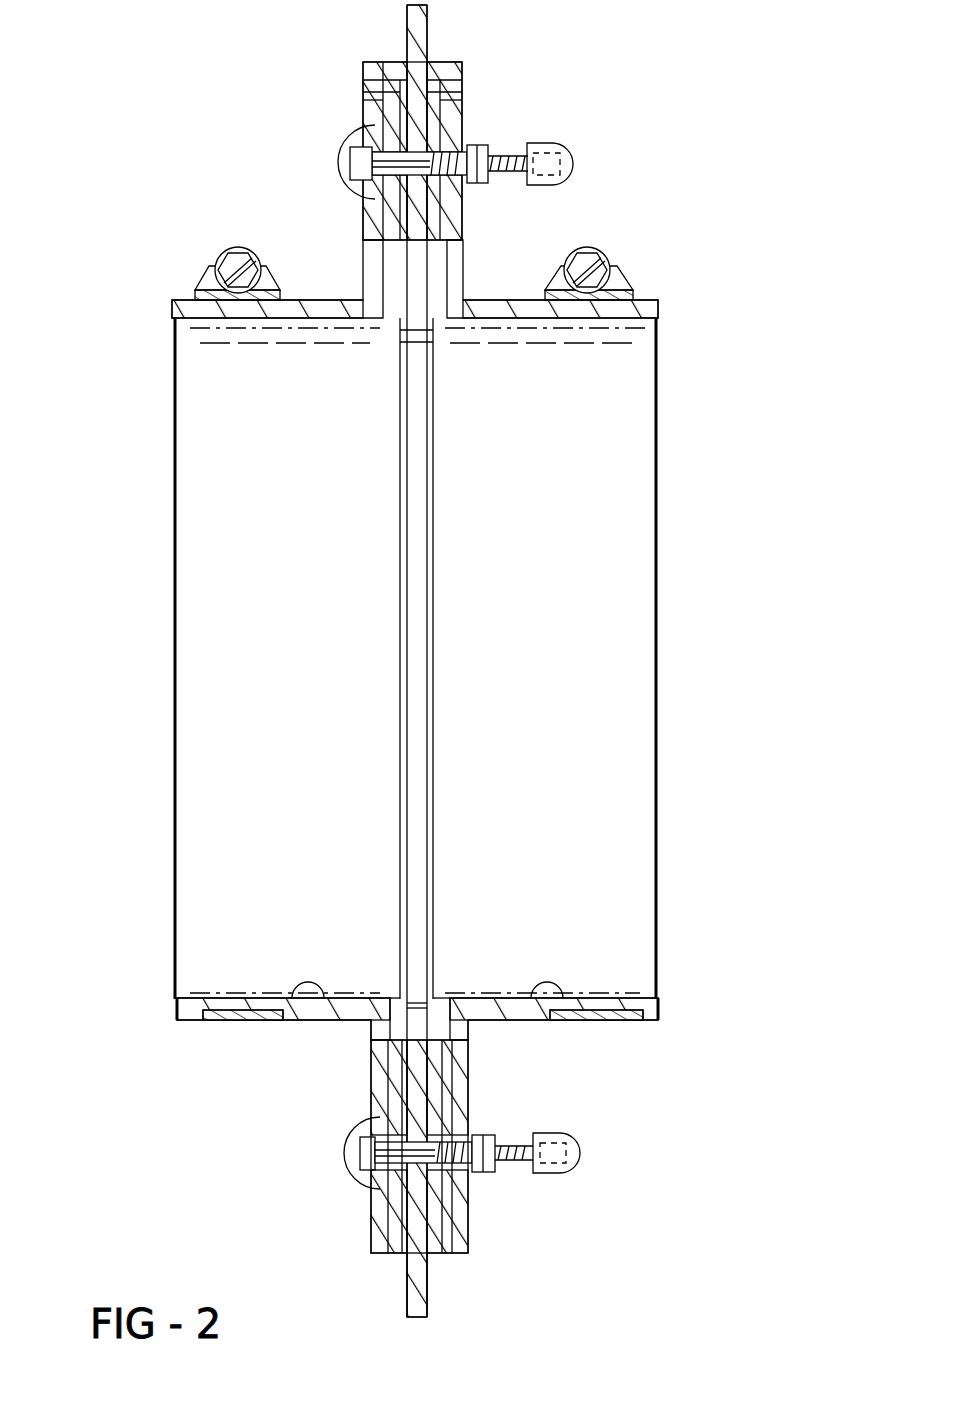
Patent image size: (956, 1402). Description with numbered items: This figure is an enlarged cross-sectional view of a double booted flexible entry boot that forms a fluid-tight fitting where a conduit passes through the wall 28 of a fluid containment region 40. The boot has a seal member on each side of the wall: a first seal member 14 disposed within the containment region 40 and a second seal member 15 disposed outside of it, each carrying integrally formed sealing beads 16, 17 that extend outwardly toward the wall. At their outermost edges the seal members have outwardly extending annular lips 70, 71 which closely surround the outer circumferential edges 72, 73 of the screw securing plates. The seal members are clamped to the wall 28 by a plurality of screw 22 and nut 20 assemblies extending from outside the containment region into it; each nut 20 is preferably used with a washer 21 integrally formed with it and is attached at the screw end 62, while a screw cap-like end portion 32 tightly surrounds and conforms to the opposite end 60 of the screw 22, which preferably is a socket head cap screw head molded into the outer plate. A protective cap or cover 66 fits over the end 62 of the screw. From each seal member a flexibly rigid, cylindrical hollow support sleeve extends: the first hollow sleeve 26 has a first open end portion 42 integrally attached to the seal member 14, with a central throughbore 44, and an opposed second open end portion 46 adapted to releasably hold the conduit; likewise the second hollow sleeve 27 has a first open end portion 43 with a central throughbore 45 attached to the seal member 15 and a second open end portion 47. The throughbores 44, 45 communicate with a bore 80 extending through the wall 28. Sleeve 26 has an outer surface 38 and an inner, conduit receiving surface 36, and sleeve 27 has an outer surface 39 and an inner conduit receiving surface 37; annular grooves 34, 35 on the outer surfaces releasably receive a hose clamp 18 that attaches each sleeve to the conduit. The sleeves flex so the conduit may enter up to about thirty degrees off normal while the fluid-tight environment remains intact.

The first seal member 14 is at (438, 60).
The second seal member 15 is at (378, 58).
The sealing beads 16 is at (465, 97).
The sealing beads 17 is at (365, 97).
The hose clamp 18 is at (212, 255).
The nut 20 is at (480, 1174).
The washer 21 is at (475, 1178).
The screw 22 is at (503, 152).
The first hollow sleeve 26 is at (522, 1024).
The second hollow sleeve 27 is at (312, 1024).
The wall 28 is at (407, 1280).
The screw cap-like end portion 32 is at (350, 160).
The annular groove 34 is at (620, 1022).
The annular groove 35 is at (205, 1020).
The inner conduit receiving surface 36 is at (483, 996).
The inner conduit receiving surface 37 is at (313, 996).
The outer surface 38 is at (470, 1022).
The outer surface 39 is at (348, 1022).
The fluid containment region 40 is at (736, 1129).
The first open end portion 42 is at (443, 994).
The first open end portion 43 is at (378, 994).
The central throughbore 44 is at (565, 1007).
The central throughbore 45 is at (263, 1022).
The second open end portion 46 is at (636, 321).
The second open end portion 47 is at (186, 321).
The end portion of screw 60 is at (356, 165).
The screw end 62 is at (563, 148).
The protective cap or cover 66 is at (575, 163).
The annular lip 70 is at (470, 62).
The annular lip 71 is at (372, 62).
The outer circumferential edge 72 is at (465, 80).
The outer circumferential edge 73 is at (362, 82).
The bore 80 is at (432, 335).